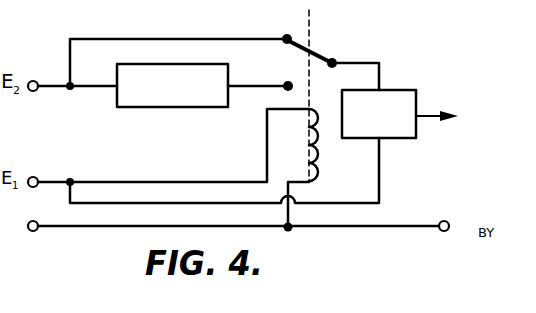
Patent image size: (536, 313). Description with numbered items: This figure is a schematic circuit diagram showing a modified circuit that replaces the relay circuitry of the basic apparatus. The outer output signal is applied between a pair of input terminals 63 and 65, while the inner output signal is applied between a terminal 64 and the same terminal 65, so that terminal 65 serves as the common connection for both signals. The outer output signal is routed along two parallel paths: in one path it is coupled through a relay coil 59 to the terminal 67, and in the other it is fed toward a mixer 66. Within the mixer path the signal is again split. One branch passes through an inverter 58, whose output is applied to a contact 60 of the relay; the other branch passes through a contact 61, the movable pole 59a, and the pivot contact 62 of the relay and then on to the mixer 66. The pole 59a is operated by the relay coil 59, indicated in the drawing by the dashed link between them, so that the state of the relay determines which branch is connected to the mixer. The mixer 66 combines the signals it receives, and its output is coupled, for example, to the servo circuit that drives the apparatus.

The inverter 58 is at (128, 108).
The relay coil 59 is at (316, 170).
The pole 59a is at (319, 57).
The contact 60 is at (285, 89).
The contact 61 is at (284, 34).
The pivot contact 62 is at (339, 60).
The input terminal 63 is at (34, 76).
The terminal 64 is at (31, 176).
The input terminal 65 is at (32, 232).
The mixer 66 is at (401, 95).
The terminal 67 is at (438, 233).